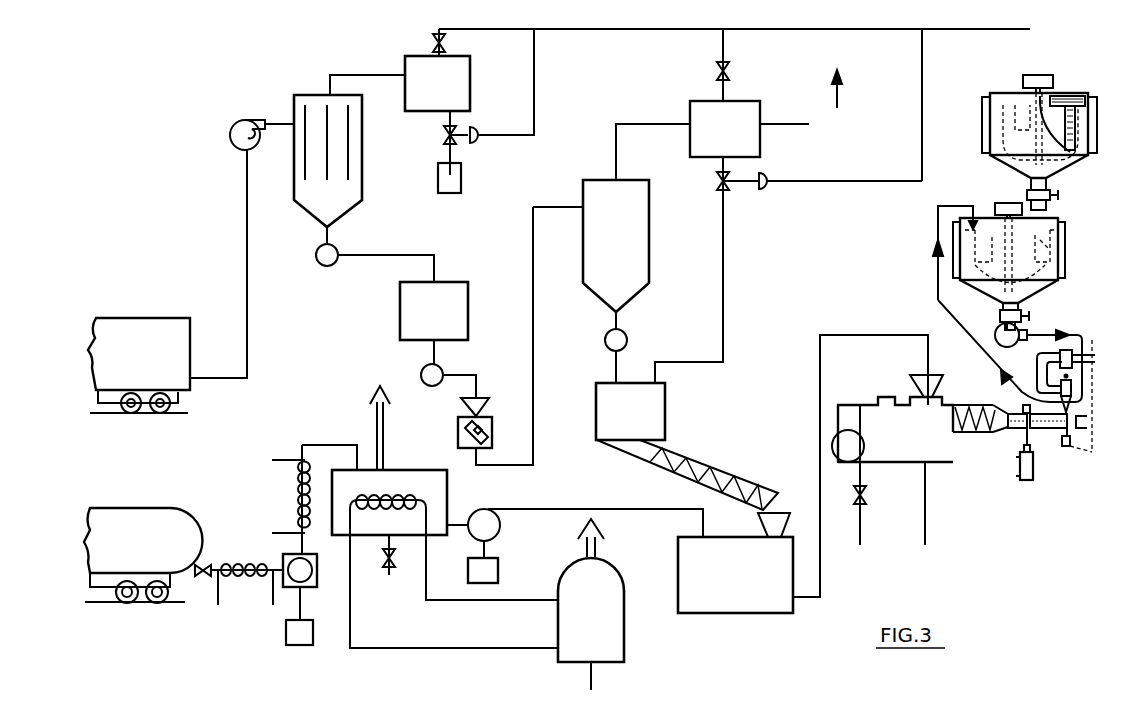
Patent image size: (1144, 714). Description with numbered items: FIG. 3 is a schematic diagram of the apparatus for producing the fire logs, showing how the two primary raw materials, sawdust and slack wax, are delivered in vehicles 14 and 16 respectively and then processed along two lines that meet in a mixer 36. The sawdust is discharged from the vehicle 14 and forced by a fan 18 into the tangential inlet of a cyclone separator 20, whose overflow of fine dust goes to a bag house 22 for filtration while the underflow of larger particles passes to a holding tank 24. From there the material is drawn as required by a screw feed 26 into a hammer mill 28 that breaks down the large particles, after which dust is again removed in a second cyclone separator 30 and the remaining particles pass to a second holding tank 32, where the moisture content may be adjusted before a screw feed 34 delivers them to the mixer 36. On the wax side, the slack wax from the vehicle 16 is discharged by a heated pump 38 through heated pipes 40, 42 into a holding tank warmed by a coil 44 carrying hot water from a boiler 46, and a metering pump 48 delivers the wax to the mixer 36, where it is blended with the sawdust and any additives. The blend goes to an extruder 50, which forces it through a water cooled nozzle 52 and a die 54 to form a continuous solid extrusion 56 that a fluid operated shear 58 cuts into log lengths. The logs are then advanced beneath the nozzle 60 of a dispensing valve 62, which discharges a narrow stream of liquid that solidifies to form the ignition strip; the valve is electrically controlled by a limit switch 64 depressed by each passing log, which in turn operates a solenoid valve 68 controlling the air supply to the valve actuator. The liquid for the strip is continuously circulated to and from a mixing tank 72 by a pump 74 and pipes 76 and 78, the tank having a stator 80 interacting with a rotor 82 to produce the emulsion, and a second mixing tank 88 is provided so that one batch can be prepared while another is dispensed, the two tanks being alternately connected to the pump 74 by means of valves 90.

The vehicle 14 is at (134, 318).
The vehicle 16 is at (140, 508).
The fan 18 is at (230, 128).
The cyclone separator 20 is at (362, 165).
The bag house 22 is at (470, 96).
The holding tank 24 is at (468, 310).
The screw feed 26 is at (441, 370).
The hammer mill 28 is at (492, 430).
The second cyclone separator 30 is at (649, 275).
The second holding tank 32 is at (632, 383).
The screw feed 34 is at (728, 470).
The mixer 36 is at (730, 613).
The heated pump 38 is at (317, 585).
The heated pipe 40 is at (255, 565).
The heated pipe 42 is at (300, 495).
The coil 44 is at (388, 495).
The boiler 46 is at (625, 640).
The metering pump 48 is at (498, 535).
The extruder 50 is at (912, 462).
The water cooled nozzle 52 is at (975, 435).
The die 54 is at (1000, 400).
The continuous solid extrusion 56 is at (1018, 435).
The fluid operated shear 58 is at (1033, 480).
The nozzle 60 is at (1027, 408).
The dispensing valve 62 is at (1092, 396).
The limit switch 64 is at (1071, 450).
The solenoid valve 68 is at (1060, 352).
The mixing tank 72 is at (1068, 245).
The pump 74 is at (996, 335).
The pipe 76 is at (1040, 333).
The pipe 78 is at (955, 328).
The stator 80 is at (1026, 250).
The rotor 82 is at (1044, 250).
The second mixing tank 88 is at (1097, 120).
The valves 90 is at (1000, 314).